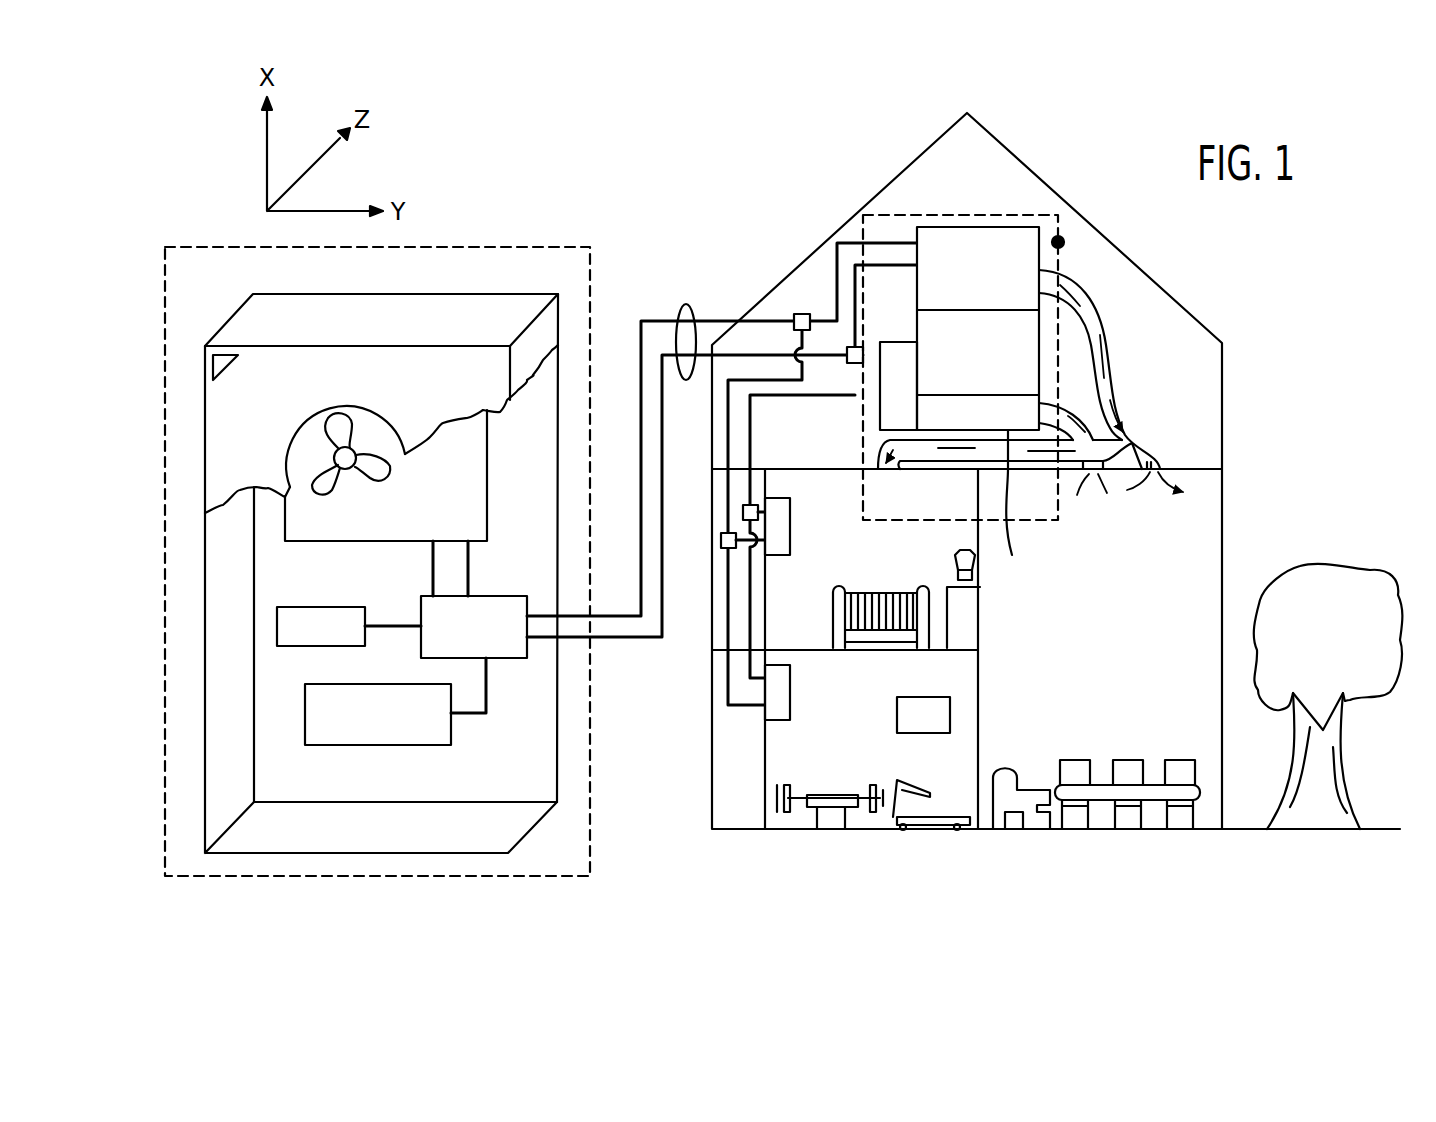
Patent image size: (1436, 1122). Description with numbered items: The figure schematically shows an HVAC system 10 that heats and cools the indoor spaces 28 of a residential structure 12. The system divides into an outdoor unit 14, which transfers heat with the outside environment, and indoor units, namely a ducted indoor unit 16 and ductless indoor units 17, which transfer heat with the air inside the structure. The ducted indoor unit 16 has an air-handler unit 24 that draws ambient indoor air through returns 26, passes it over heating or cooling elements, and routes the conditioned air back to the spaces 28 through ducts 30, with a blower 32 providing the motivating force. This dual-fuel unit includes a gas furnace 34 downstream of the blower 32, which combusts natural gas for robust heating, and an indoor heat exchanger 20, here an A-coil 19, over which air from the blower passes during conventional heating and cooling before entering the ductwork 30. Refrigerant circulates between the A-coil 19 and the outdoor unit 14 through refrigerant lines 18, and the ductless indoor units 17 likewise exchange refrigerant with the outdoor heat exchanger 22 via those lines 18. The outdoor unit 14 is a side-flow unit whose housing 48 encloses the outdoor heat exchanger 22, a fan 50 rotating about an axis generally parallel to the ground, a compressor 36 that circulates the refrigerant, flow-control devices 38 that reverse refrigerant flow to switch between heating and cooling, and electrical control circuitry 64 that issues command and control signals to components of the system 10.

The HVAC system 10 is at (670, 162).
The residential structure 12 is at (1147, 275).
The outdoor unit 14 is at (438, 246).
The ducted indoor unit 16 is at (988, 212).
The ductless indoor units 17 is at (790, 523).
The refrigerant lines 18 is at (689, 306).
The A-coil 19 is at (963, 227).
The indoor heat exchanger 20 is at (917, 237).
The outdoor heat exchanger 22 is at (487, 478).
The air-handler unit 24 is at (1064, 238).
The returns 26 is at (1105, 464).
The indoor spaces 28 is at (864, 570).
The ducts 30 is at (1137, 408).
The blower 32 is at (897, 755).
The gas furnace 34 is at (1100, 324).
The compressor 36 is at (378, 747).
The flow-control devices 38 is at (514, 658).
The housing 48 is at (378, 315).
The fan 50 is at (377, 442).
The electrical control circuitry 64 is at (315, 606).